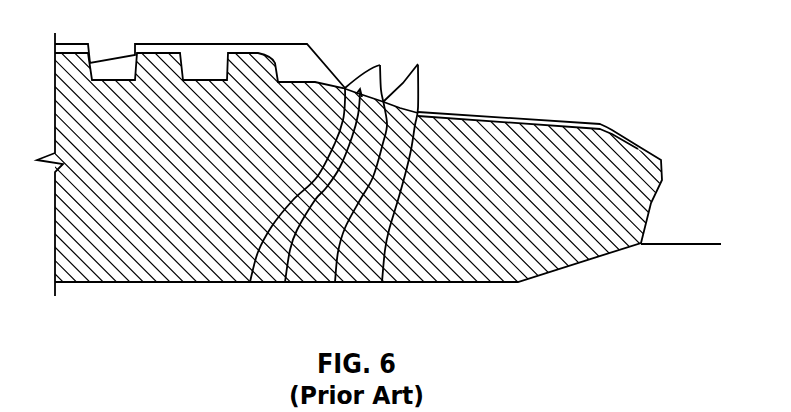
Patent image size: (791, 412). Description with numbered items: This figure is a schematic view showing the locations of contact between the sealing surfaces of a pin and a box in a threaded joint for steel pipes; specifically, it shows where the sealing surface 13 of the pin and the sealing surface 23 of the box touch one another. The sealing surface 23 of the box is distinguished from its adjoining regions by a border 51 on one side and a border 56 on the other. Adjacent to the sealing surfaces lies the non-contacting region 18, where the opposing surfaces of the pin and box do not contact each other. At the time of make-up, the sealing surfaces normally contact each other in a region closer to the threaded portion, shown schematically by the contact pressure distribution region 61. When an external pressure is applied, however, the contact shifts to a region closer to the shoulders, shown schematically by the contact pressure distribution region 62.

The sealing surface of the pin 13 is at (335, 282).
The non-contacting region 18 is at (531, 119).
The sealing surface of the box 23 is at (285, 282).
The border 51 is at (250, 282).
The border 56 is at (382, 282).
The contact pressure distribution region 61 is at (380, 65).
The contact pressure distribution region 62 is at (418, 65).